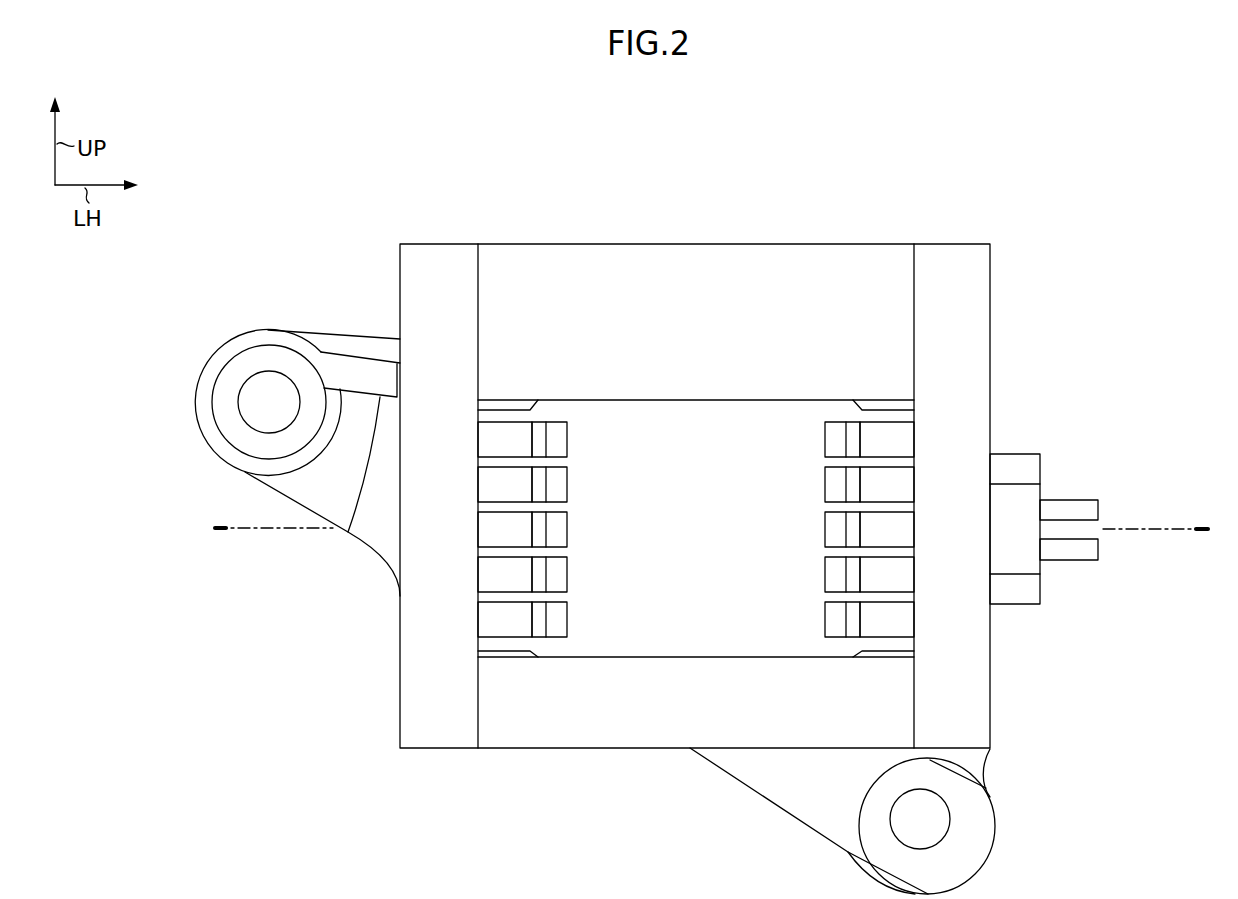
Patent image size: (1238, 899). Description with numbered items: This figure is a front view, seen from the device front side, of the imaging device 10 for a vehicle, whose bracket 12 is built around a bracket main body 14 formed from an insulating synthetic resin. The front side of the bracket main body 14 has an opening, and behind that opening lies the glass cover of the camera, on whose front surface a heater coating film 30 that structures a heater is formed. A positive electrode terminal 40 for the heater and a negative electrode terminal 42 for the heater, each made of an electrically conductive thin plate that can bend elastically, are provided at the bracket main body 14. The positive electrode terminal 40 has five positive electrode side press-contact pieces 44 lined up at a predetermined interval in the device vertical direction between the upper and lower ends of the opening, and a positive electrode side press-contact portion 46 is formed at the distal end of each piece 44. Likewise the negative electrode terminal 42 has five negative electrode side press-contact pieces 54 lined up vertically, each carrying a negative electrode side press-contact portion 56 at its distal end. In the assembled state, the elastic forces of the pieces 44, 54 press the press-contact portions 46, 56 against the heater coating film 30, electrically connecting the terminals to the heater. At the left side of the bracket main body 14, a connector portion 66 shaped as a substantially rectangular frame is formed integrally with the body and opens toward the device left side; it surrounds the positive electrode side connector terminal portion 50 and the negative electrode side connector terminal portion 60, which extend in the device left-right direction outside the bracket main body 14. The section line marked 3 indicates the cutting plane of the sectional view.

The imaging device for a vehicle 10 is at (957, 140).
The bracket 12 is at (595, 569).
The bracket main body 14 is at (613, 750).
The heater coating film 30 is at (692, 415).
The positive electrode terminal for the heater 40 is at (775, 539).
The negative electrode terminal for the heater 42 is at (624, 508).
The positive electrode side press-contact piece 44 is at (906, 442).
The positive electrode side press-contact portion 46 is at (827, 439).
The negative electrode side press-contact piece 54 is at (478, 439).
The negative electrode side press-contact portion 56 is at (558, 442).
The connector portion 66 is at (1018, 453).
The negative electrode side connector terminal portion 60 is at (1070, 505).
The positive electrode side connector terminal portion 50 is at (1076, 553).
The section line III-III 3 is at (222, 533).